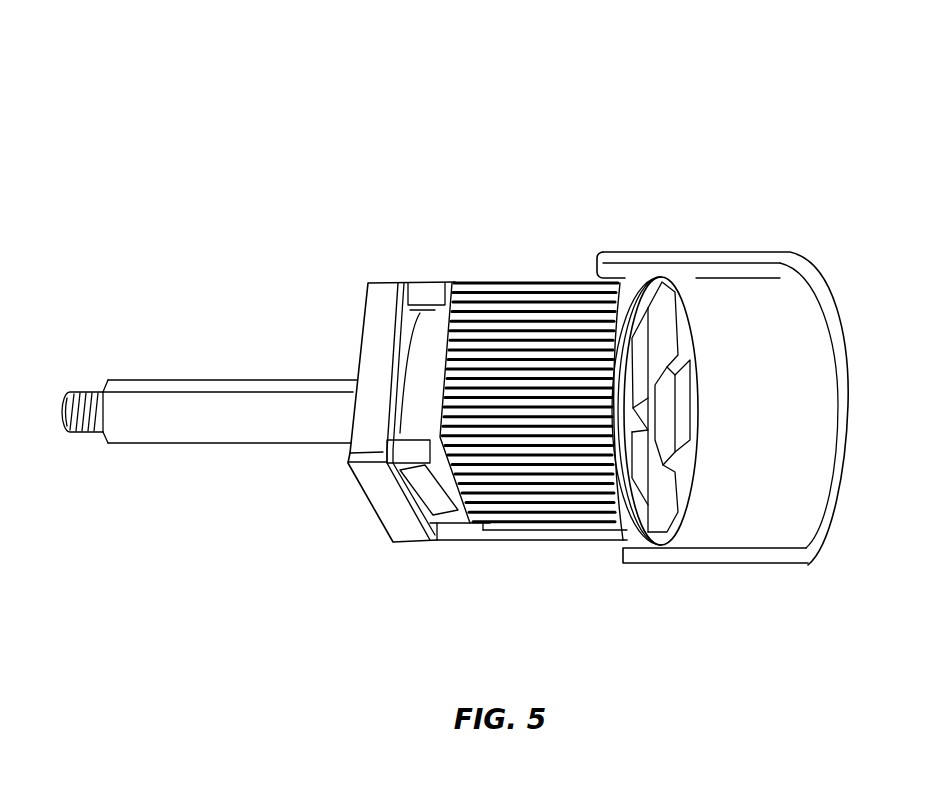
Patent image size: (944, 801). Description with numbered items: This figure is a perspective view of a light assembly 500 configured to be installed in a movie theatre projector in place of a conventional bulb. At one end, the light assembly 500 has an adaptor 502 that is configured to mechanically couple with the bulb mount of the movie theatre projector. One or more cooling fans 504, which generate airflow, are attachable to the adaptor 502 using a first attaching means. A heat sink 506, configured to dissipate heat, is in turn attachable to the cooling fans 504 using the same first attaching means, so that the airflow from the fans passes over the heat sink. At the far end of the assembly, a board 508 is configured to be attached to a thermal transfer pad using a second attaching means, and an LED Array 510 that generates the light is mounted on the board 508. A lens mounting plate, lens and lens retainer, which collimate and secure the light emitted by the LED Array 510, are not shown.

The light assembly 500 is at (547, 92).
The adaptor 502 is at (158, 378).
The cooling fans 504 is at (437, 296).
The heat sink 506 is at (507, 313).
The board 508 is at (652, 290).
The LED Array 510 is at (708, 297).